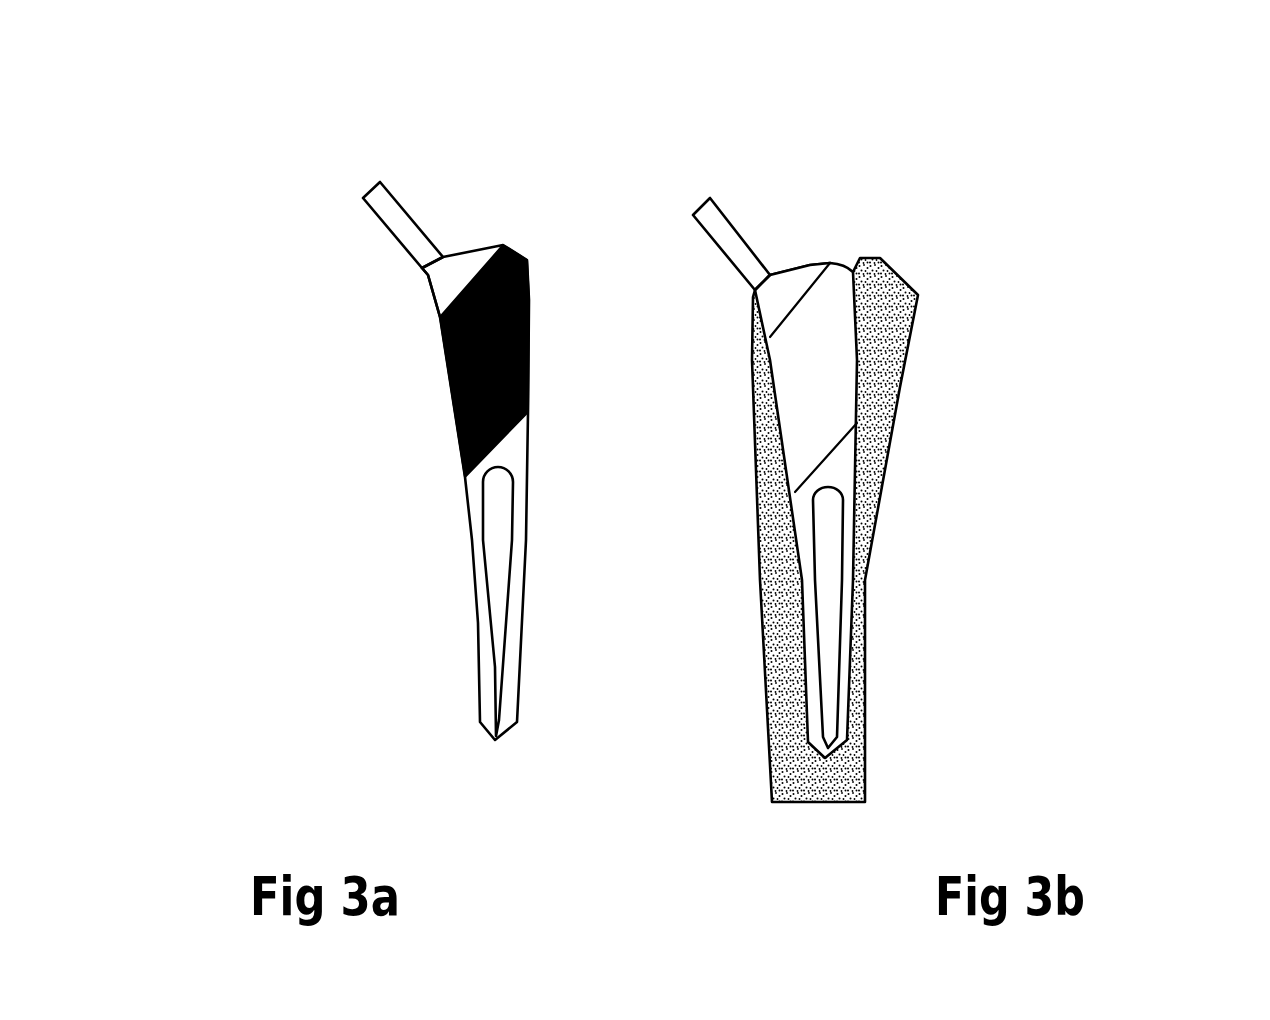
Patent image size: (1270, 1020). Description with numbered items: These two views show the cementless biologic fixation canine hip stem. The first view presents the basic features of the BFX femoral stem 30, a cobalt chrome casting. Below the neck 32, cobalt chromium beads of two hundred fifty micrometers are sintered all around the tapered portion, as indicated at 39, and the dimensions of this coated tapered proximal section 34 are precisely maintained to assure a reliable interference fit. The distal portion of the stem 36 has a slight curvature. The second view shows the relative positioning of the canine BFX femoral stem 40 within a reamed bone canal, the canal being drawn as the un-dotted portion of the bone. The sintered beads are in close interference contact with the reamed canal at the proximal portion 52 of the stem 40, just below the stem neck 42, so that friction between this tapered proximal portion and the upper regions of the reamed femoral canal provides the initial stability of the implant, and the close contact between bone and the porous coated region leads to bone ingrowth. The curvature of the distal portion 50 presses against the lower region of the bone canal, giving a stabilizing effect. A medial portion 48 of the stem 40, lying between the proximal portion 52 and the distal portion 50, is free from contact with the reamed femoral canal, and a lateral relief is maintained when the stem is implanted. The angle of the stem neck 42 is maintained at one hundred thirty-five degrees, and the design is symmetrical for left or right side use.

In FIG. 3A, the BFX femoral stem 30 is at (594, 207).
In FIG. 3A, the neck 32 is at (377, 180).
In FIG. 3A, the coated tapered proximal section 34 is at (427, 267).
In FIG. 3A, the sintered bead coating 39 is at (445, 370).
In FIG. 3A, the distal portion of the stem 36 is at (473, 618).
In FIG. 3B, the canine BFX femoral stem 40 is at (945, 220).
In FIG. 3B, the stem neck 42 is at (725, 210).
In FIG. 3B, the medial portion of the stem 48 is at (848, 490).
In FIG. 3B, the distal portion of the stem 50 is at (850, 605).
In FIG. 3B, the proximal portion of the stem 52 is at (893, 270).